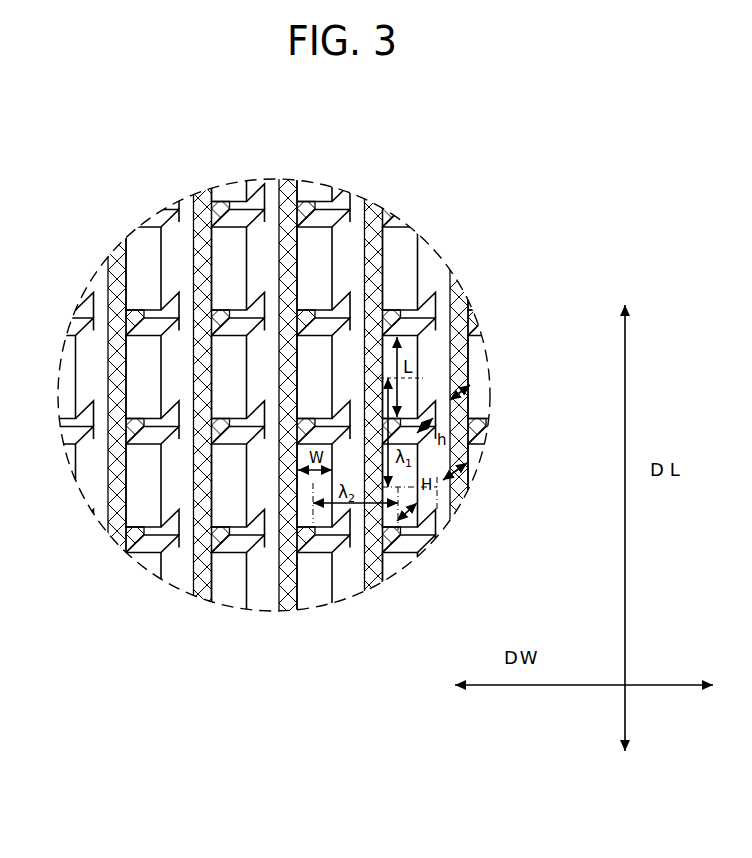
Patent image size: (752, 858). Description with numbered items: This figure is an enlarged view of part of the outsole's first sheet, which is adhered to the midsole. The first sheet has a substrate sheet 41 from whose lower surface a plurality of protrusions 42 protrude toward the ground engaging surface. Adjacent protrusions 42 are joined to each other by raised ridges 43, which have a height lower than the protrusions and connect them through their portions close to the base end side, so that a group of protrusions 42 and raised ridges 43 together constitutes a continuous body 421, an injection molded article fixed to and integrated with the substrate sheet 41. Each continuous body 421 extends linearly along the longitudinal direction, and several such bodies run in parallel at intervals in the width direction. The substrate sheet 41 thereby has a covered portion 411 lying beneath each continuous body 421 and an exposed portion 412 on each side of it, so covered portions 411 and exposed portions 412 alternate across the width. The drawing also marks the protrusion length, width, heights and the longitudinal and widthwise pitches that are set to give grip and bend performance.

The substrate sheet 41 is at (370, 230).
The covered portion 411 is at (262, 570).
The exposed portion 412 is at (297, 570).
The protrusion 42 is at (320, 370).
The continuous body 421 is at (150, 276).
The raised ridge 43 is at (432, 307).